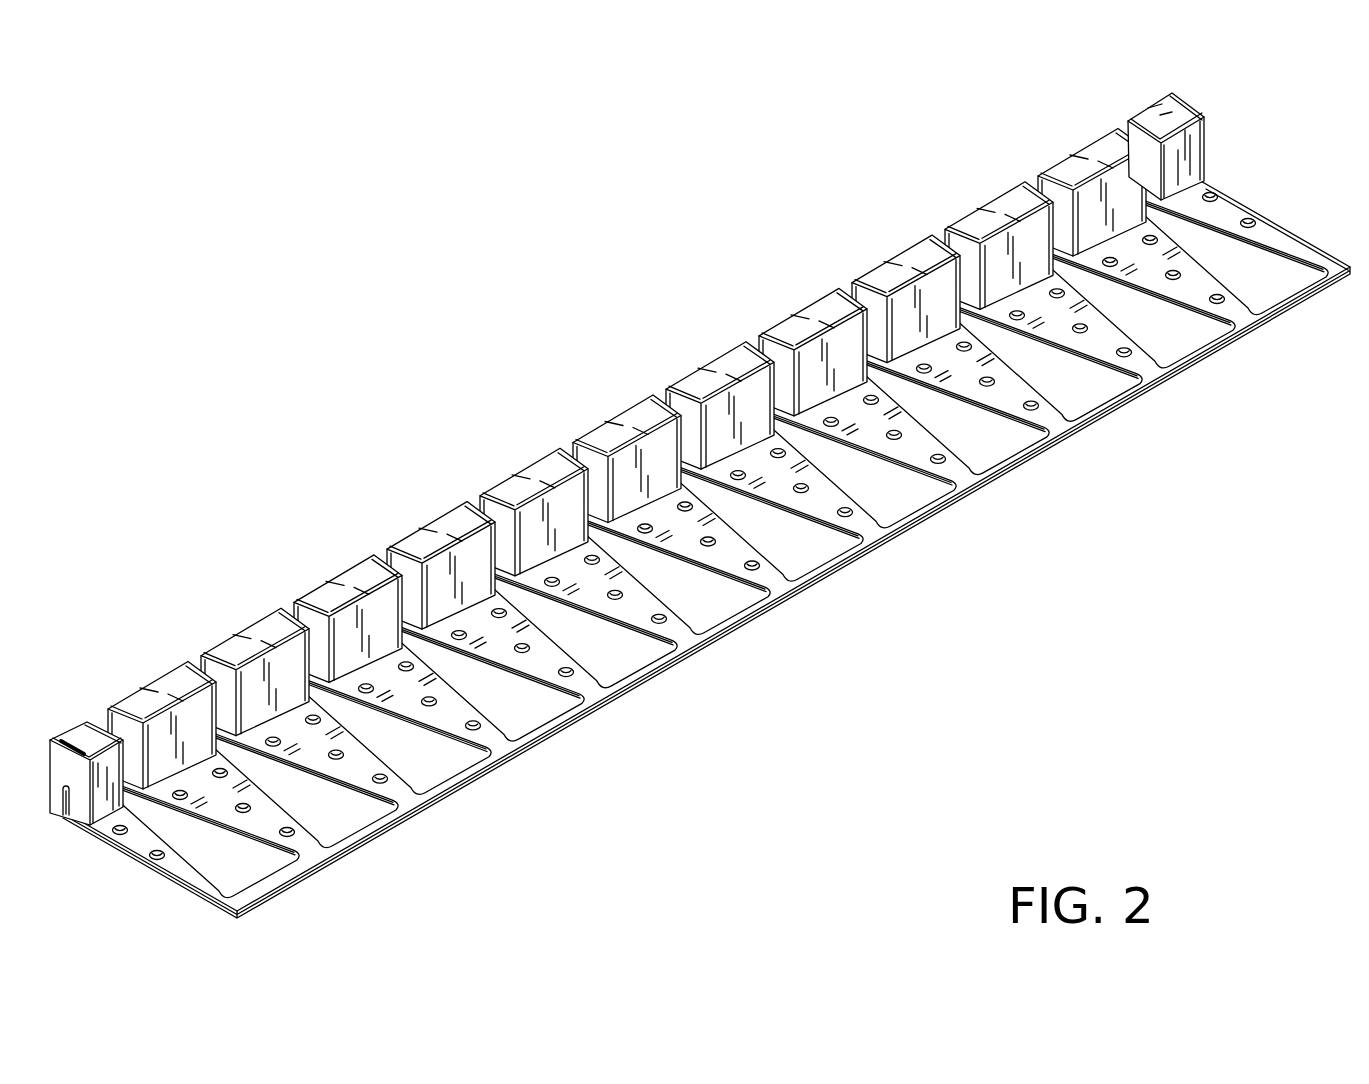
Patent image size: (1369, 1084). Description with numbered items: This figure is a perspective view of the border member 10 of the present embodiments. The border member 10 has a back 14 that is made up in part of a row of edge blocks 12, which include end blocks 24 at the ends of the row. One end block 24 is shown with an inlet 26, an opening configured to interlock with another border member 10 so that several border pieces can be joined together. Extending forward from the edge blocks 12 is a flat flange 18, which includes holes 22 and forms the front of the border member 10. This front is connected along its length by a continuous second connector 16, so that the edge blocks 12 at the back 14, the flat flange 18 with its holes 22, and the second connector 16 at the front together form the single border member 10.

The border member 10 is at (392, 317).
The edge blocks 12 is at (597, 421).
The back 14 is at (371, 546).
The second connector 16 is at (748, 626).
The flat flange 18 is at (540, 663).
The holes 22 is at (1178, 270).
The end blocks 24 is at (1185, 98).
The inlet 26 is at (63, 818).